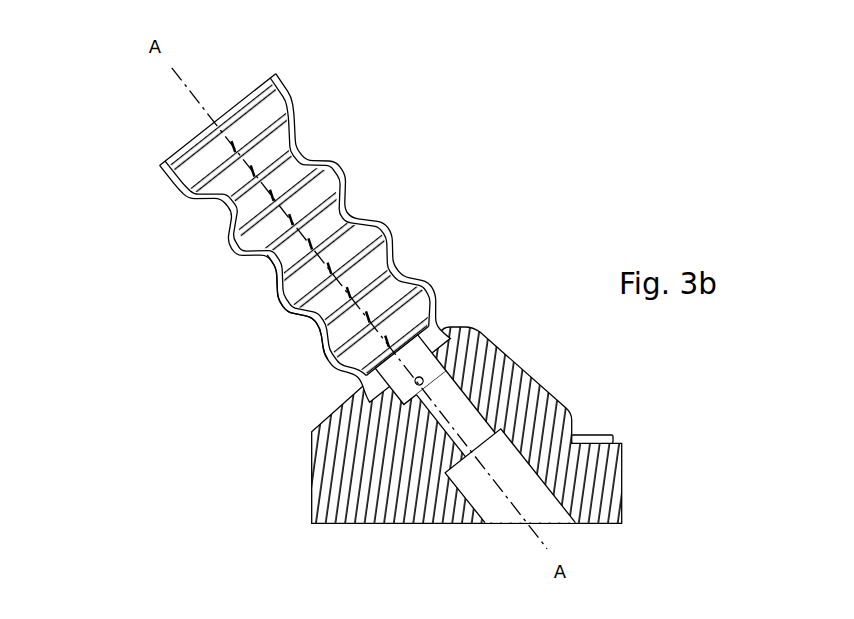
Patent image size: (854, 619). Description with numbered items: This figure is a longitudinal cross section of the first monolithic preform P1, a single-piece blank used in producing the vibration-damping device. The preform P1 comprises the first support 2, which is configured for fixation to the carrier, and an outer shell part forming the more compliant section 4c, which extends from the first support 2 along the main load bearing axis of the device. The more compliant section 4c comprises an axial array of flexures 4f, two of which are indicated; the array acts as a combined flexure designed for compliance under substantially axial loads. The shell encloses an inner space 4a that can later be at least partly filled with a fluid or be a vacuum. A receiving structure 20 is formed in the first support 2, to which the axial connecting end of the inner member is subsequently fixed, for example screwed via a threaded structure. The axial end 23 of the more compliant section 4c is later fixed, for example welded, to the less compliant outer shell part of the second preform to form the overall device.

The first support 2 is at (521, 302).
The inner space 4a is at (262, 226).
The more compliant section 4c is at (432, 160).
The flexure 4f is at (289, 339).
The receiving structure 20 is at (478, 397).
The axial end 23 is at (163, 160).
The first monolithic preform P1 is at (597, 129).